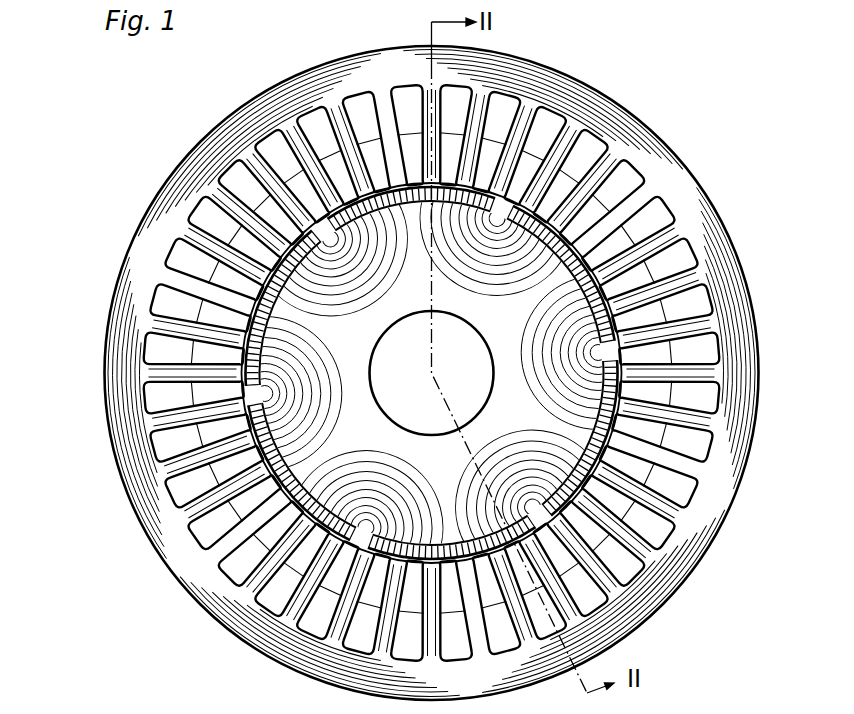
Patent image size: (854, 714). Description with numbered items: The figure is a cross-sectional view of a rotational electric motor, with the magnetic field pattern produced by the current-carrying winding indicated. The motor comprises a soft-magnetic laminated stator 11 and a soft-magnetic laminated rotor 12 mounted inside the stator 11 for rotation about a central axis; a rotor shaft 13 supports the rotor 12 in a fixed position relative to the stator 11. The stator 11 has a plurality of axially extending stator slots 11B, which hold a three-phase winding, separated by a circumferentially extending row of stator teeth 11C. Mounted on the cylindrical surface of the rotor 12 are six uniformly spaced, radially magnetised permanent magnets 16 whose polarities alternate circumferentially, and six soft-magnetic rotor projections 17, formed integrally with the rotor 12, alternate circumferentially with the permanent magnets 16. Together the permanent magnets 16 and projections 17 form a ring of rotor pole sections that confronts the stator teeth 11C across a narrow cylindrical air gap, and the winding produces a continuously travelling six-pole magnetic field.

The first motor part (stator) 11 is at (108, 333).
The stator slots 11B is at (673, 247).
The stator teeth 11C is at (187, 222).
The second motor part (rotor) 12 is at (237, 460).
The rotor shaft 13 is at (409, 385).
The permanent magnets 16 is at (483, 187).
The soft-magnetic rotor projections 17 is at (305, 117).